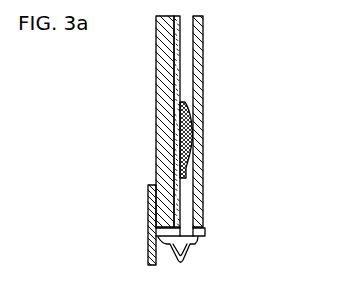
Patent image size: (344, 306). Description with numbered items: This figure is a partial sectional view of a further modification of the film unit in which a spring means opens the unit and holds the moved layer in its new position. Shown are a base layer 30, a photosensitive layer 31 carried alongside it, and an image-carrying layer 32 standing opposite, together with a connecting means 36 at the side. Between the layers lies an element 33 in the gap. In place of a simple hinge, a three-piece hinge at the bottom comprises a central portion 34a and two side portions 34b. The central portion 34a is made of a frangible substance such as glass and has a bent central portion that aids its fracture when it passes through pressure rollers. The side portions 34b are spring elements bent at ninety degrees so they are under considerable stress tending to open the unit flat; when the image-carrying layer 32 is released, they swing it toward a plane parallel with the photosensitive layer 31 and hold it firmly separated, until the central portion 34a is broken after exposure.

The base layer 30 is at (165, 68).
The photosensitive layer 31 is at (175, 39).
The image-carrying layer 32 is at (204, 70).
The wedge element 33 is at (184, 112).
The central portion 34a is at (198, 244).
The side portions 34b is at (157, 236).
The connecting means 36 is at (153, 258).